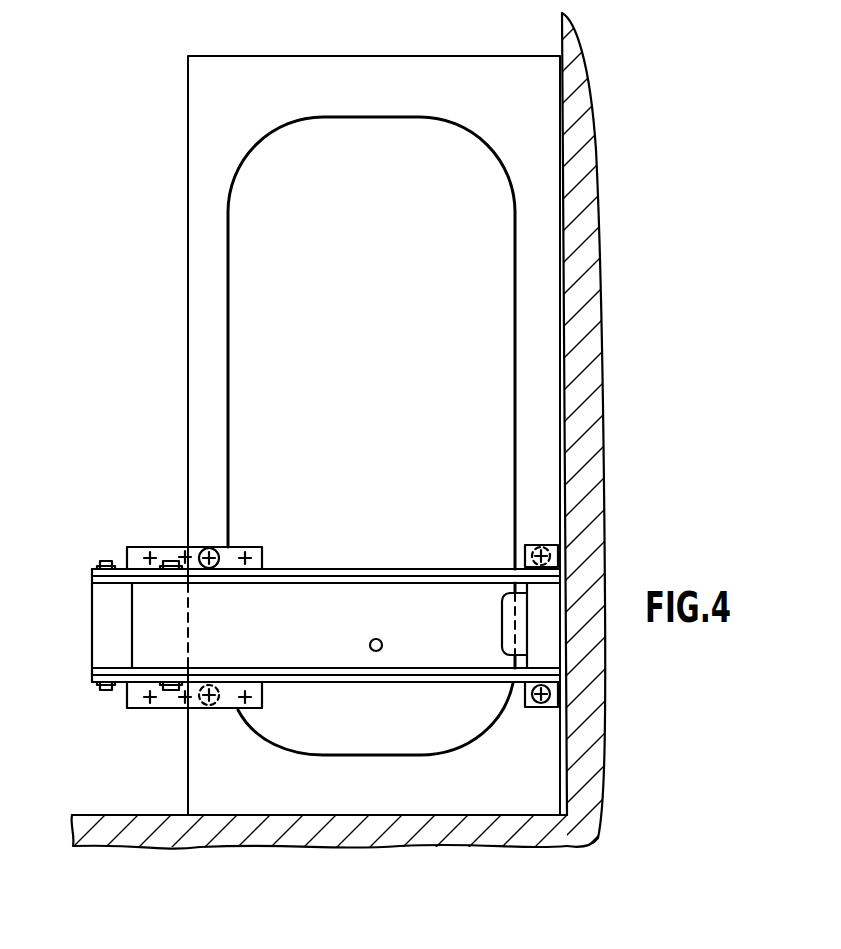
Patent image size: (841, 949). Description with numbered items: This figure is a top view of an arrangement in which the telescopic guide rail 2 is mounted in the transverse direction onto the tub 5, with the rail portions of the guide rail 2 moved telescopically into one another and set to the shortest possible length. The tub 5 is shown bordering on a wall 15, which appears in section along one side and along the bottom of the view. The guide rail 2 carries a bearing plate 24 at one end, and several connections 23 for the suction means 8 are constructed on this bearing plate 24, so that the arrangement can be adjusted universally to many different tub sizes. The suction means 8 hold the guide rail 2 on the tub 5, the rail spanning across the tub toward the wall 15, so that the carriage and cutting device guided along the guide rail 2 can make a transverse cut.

The guide rail 2 is at (498, 683).
The tub 5 is at (478, 268).
The suction means 8 is at (566, 552).
The wall 15 is at (580, 477).
The connections 23 is at (153, 548).
The bearing plate 24 is at (133, 710).